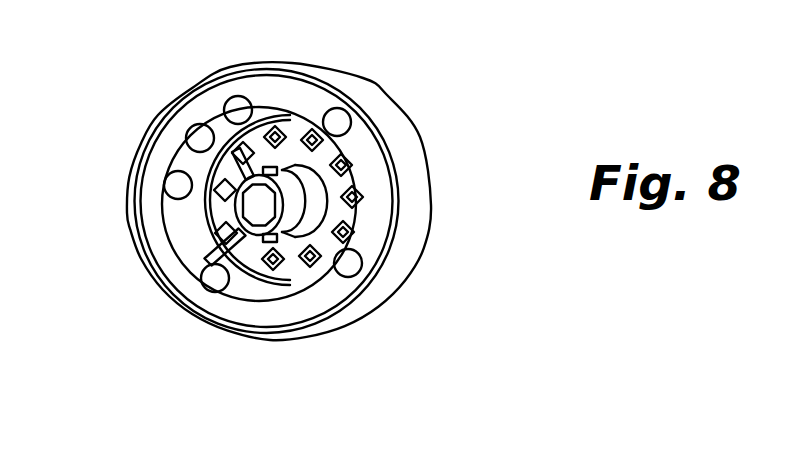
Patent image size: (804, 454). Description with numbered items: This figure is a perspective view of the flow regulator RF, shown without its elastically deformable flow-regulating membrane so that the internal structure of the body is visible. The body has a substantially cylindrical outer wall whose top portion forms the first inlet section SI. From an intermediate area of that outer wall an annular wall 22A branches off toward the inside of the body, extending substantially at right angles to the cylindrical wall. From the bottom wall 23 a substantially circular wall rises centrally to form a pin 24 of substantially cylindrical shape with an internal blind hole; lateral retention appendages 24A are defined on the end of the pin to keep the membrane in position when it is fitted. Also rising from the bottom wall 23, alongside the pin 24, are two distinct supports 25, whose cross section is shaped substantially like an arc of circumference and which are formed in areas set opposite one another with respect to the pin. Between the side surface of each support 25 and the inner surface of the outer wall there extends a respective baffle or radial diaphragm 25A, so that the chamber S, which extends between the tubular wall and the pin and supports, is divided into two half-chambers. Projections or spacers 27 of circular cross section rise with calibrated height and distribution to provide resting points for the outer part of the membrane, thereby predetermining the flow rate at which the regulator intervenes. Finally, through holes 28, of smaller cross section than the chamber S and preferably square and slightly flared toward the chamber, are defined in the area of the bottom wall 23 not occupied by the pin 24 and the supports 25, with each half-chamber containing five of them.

The flow regulator RF is at (474, 100).
The first inlet section SI is at (143, 222).
The annular wall 22A is at (217, 103).
The radial diaphragm 25A is at (340, 128).
The projections 27 is at (208, 133).
The pin 24 is at (297, 127).
The through holes 28 is at (268, 125).
The supports 25 is at (322, 189).
The chamber S is at (223, 183).
The bottom wall 23 is at (222, 213).
The lateral retention appendages 24A is at (285, 241).